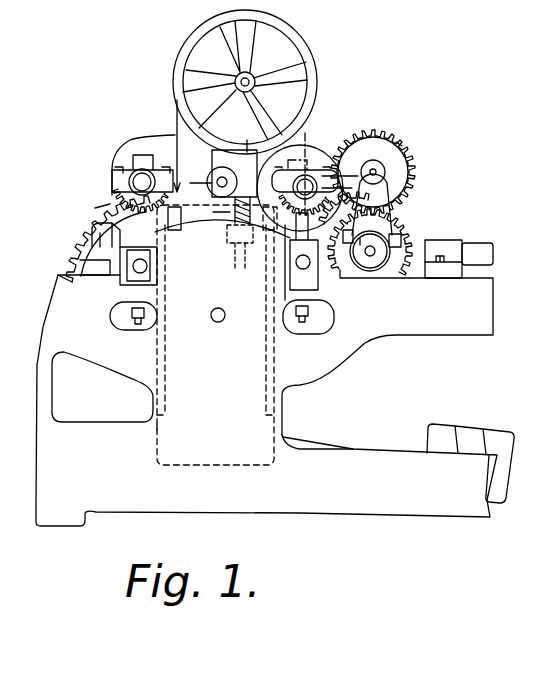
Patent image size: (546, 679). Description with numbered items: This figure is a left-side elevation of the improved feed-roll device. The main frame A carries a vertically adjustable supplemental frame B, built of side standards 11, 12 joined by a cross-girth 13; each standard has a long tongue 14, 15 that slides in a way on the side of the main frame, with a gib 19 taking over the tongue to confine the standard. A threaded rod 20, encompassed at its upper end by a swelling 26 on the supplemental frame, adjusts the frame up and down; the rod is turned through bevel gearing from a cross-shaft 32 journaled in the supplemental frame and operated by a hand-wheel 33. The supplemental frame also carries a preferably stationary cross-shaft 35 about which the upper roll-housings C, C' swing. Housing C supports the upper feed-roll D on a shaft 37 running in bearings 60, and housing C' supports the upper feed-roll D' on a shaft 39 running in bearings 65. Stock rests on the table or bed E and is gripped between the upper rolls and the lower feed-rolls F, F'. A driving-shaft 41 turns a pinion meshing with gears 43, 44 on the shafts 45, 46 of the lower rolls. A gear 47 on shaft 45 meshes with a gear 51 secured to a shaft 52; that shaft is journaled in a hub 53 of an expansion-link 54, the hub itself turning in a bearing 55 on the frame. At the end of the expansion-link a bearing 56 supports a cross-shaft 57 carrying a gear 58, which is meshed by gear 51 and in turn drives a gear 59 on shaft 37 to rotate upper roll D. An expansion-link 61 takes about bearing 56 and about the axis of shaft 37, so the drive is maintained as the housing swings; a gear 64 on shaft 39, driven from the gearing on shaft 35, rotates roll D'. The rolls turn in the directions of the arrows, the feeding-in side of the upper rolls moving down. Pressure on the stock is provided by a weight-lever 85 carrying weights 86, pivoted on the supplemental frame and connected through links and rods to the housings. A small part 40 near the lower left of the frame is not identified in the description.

The main frame A is at (266, 373).
The supplemental frame B is at (210, 200).
The upper roll-housing C is at (305, 174).
The upper roll-housing C' is at (141, 176).
The upper feed-roll D is at (370, 236).
The upper feed-roll D' is at (108, 229).
The stock-supporting table E is at (482, 247).
The lower feed-roll F is at (314, 254).
The lower feed-roll F' is at (106, 234).
The side standard 11 is at (222, 222).
The side standard 12 is at (262, 380).
The cross-girth 13 is at (176, 120).
The tongue 14 is at (277, 237).
The tongue 15 is at (168, 226).
The gib 19 is at (170, 365).
The threaded rod 20 is at (230, 223).
The swelling 26 is at (252, 155).
The cross-shaft 32 is at (247, 77).
The hand-wheel 33 is at (308, 62).
The cross-shaft 35 is at (220, 177).
The shaft 37 is at (300, 162).
The shaft 39 is at (130, 178).
The bracket 40 is at (133, 316).
The driving-shaft 41 is at (217, 323).
The gear 43 is at (369, 264).
The gear 44 is at (78, 237).
The shaft 45 is at (308, 310).
The shaft 46 is at (135, 273).
The gear 47 is at (327, 254).
The gear 51 is at (405, 232).
The shaft 52 is at (377, 258).
The hub 53 is at (385, 262).
The expansion-link 54 is at (388, 215).
The bearing 55 is at (430, 240).
The bearing 56 is at (322, 178).
The cross-shaft 57 is at (385, 163).
The gear 58 is at (405, 130).
The gear 59 is at (347, 165).
The bearing 60 is at (308, 183).
The expansion-link 61 is at (322, 222).
The gear 64 is at (108, 199).
The bearing 65 is at (138, 172).
The weight-lever 85 is at (298, 447).
The weight 86 is at (445, 433).